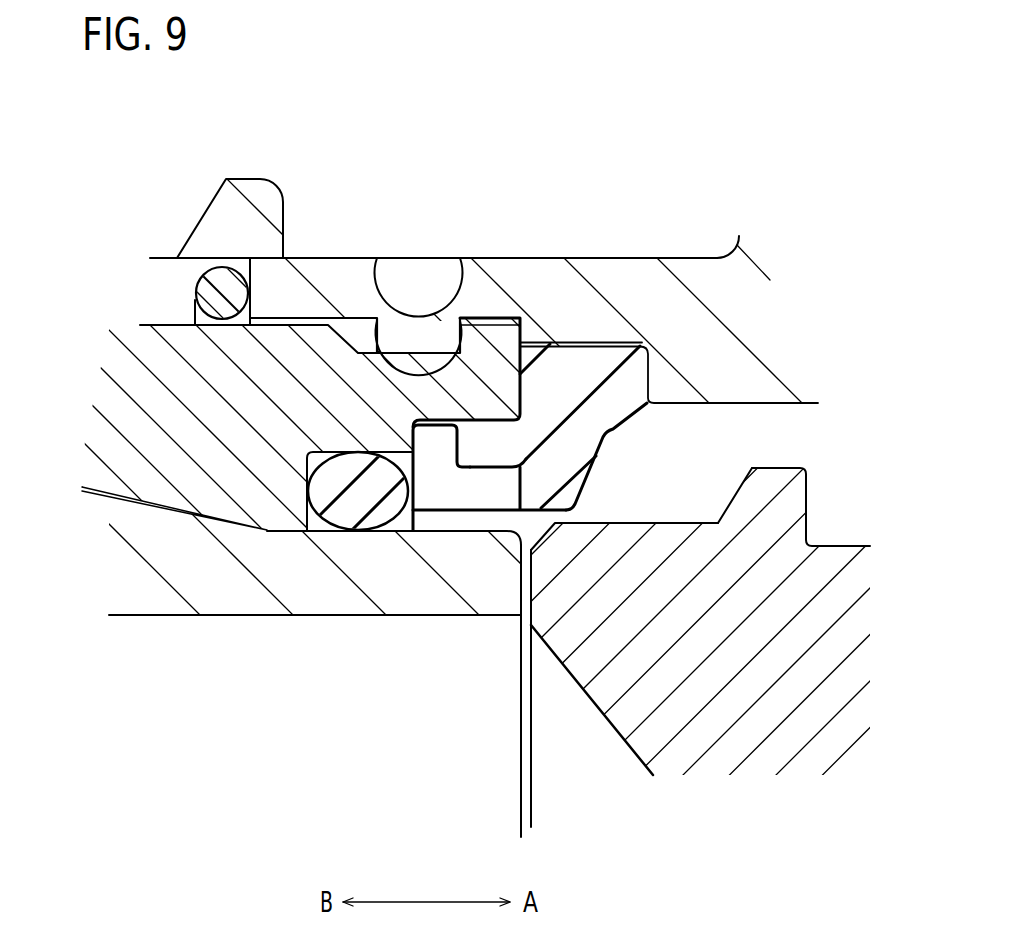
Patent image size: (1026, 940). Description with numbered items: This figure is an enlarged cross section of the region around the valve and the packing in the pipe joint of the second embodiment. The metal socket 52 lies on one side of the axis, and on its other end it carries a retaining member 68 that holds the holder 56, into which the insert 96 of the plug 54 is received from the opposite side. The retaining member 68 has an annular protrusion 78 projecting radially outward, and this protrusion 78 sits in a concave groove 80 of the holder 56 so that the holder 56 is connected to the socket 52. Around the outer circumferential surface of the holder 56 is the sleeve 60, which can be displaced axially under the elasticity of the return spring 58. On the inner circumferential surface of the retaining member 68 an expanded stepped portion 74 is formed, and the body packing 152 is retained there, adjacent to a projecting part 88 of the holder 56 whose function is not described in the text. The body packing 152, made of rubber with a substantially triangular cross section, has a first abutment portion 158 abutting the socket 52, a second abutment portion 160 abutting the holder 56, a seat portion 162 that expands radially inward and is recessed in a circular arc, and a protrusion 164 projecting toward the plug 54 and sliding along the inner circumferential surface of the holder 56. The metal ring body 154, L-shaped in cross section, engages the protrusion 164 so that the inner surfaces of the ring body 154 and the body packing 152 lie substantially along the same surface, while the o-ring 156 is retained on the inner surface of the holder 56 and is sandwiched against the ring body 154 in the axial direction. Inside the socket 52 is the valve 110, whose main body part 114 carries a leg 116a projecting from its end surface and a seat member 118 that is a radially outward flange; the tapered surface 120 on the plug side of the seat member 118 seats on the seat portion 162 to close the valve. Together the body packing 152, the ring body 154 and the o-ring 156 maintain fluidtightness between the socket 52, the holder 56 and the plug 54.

The socket 52 is at (634, 235).
The plug 54 is at (225, 632).
The holder 56 is at (72, 431).
The return spring 58 is at (197, 302).
The sleeve 60 is at (285, 180).
The retaining member 68 is at (322, 275).
The stepped portion 74 is at (613, 362).
The annular protrusion 78 is at (432, 335).
The concave groove 80 is at (413, 334).
The projection 88 is at (517, 380).
The insert 96 is at (445, 592).
The valve 110 is at (605, 765).
The main body part 114 is at (775, 697).
The leg 116a is at (594, 655).
The seat member 118 is at (772, 470).
The tapered surface 120 is at (738, 480).
The body packing 152 is at (626, 433).
The ring body 154 is at (486, 478).
The o-ring 156 is at (332, 508).
The first abutment portion 158 is at (655, 392).
The second abutment portion 160 is at (456, 452).
The seat portion 162 is at (600, 457).
The protrusion 164 is at (474, 437).